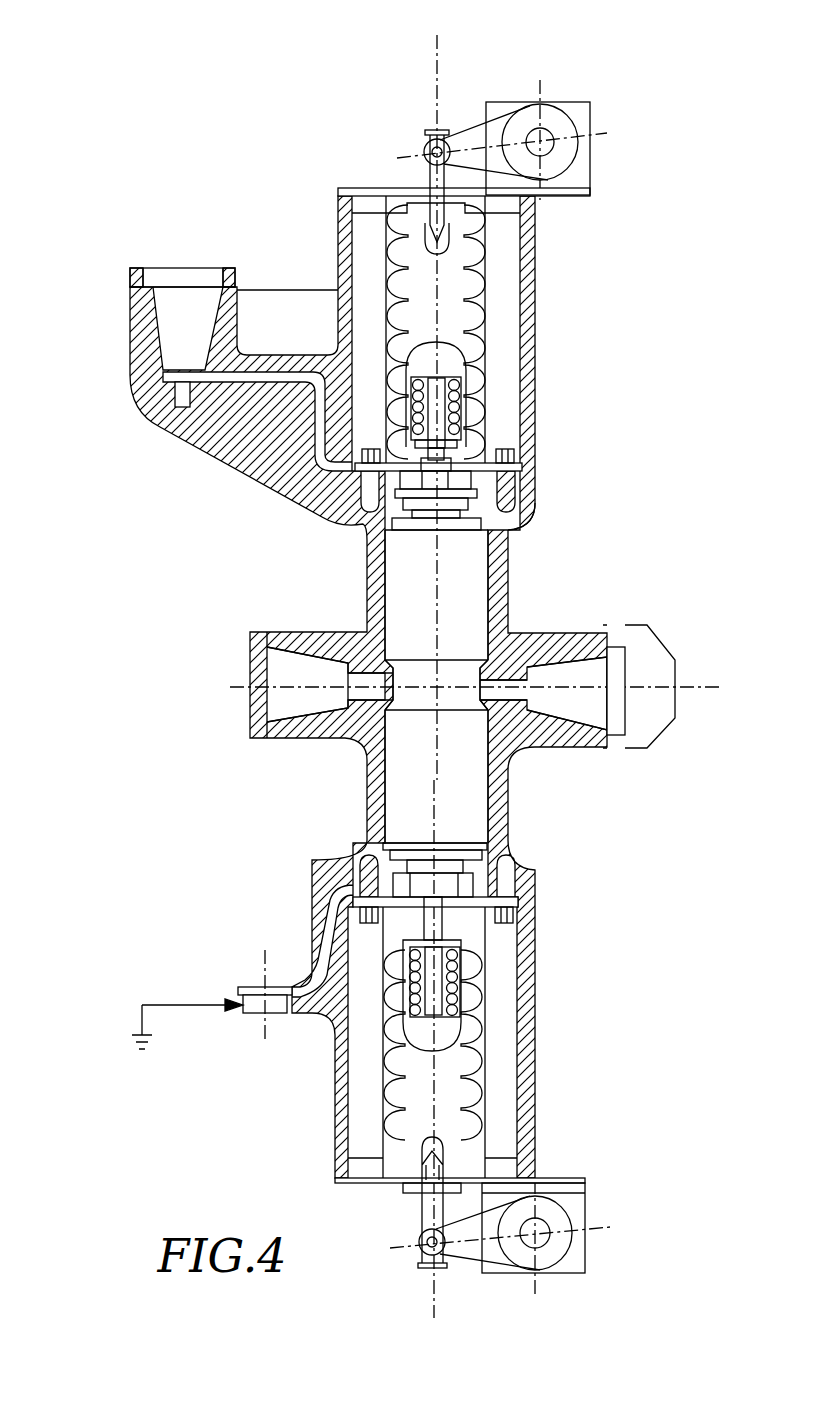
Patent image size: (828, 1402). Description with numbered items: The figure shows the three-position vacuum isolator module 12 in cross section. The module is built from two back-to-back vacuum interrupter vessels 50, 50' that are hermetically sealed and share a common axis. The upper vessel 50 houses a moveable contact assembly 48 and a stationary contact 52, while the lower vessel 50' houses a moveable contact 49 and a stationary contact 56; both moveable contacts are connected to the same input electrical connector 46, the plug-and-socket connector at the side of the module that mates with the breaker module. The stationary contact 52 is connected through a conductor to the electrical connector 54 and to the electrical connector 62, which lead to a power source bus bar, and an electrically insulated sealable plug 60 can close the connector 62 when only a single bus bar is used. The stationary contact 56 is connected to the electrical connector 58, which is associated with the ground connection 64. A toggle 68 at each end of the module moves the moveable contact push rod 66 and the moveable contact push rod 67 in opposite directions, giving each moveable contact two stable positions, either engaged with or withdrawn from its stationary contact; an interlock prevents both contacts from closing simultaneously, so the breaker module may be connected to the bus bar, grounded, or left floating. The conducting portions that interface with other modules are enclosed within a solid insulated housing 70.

The vacuum isolator module 12 is at (550, 355).
The input electrical connector 46 is at (135, 268).
The moveable contact assembly 48 is at (455, 530).
The moveable contact 49 is at (412, 840).
The vacuum vessel 50 is at (478, 595).
The vacuum vessel 50' is at (483, 776).
The stationary contact 52 is at (382, 700).
The electrical connector 54 is at (250, 685).
The stationary contact 56 is at (462, 713).
The electrical connector 58 is at (272, 1010).
The sealable plug 60 is at (677, 663).
The electrical connector 62 is at (578, 670).
The ground connection 64 is at (190, 1003).
The moveable contact push rod 66 is at (440, 283).
The moveable contact push rod 67 is at (433, 1100).
The toggle 68 is at (550, 90).
The solid insulated housing 70 is at (530, 508).